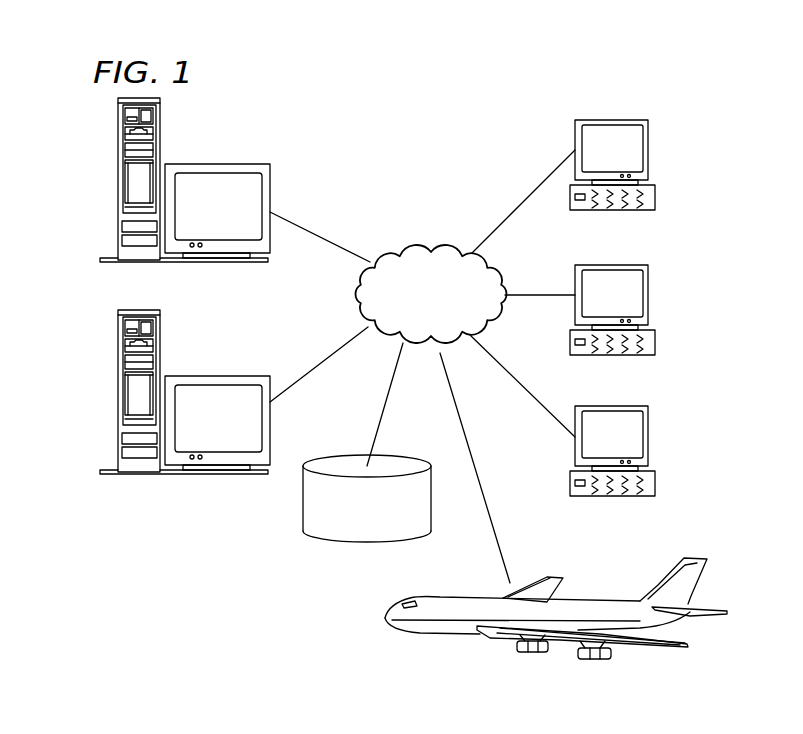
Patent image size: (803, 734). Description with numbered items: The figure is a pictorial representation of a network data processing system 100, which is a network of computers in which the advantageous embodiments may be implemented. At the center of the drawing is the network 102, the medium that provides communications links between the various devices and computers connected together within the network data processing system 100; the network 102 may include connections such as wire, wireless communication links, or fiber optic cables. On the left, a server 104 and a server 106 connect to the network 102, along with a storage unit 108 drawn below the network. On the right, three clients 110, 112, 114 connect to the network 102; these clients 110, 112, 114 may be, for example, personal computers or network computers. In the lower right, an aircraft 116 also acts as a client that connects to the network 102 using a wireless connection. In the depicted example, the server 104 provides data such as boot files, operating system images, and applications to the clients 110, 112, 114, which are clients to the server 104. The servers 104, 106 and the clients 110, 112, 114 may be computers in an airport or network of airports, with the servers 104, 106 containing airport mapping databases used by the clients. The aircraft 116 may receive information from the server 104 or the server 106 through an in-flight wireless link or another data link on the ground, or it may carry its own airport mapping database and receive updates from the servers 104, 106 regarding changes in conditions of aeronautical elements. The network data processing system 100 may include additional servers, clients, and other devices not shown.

The network data processing system 100 is at (486, 125).
The network 102 is at (405, 245).
The server 104 is at (118, 181).
The server 106 is at (162, 407).
The storage unit 108 is at (348, 542).
The client 110 is at (648, 150).
The client 112 is at (641, 324).
The client 114 is at (648, 437).
The aircraft 116 is at (453, 633).